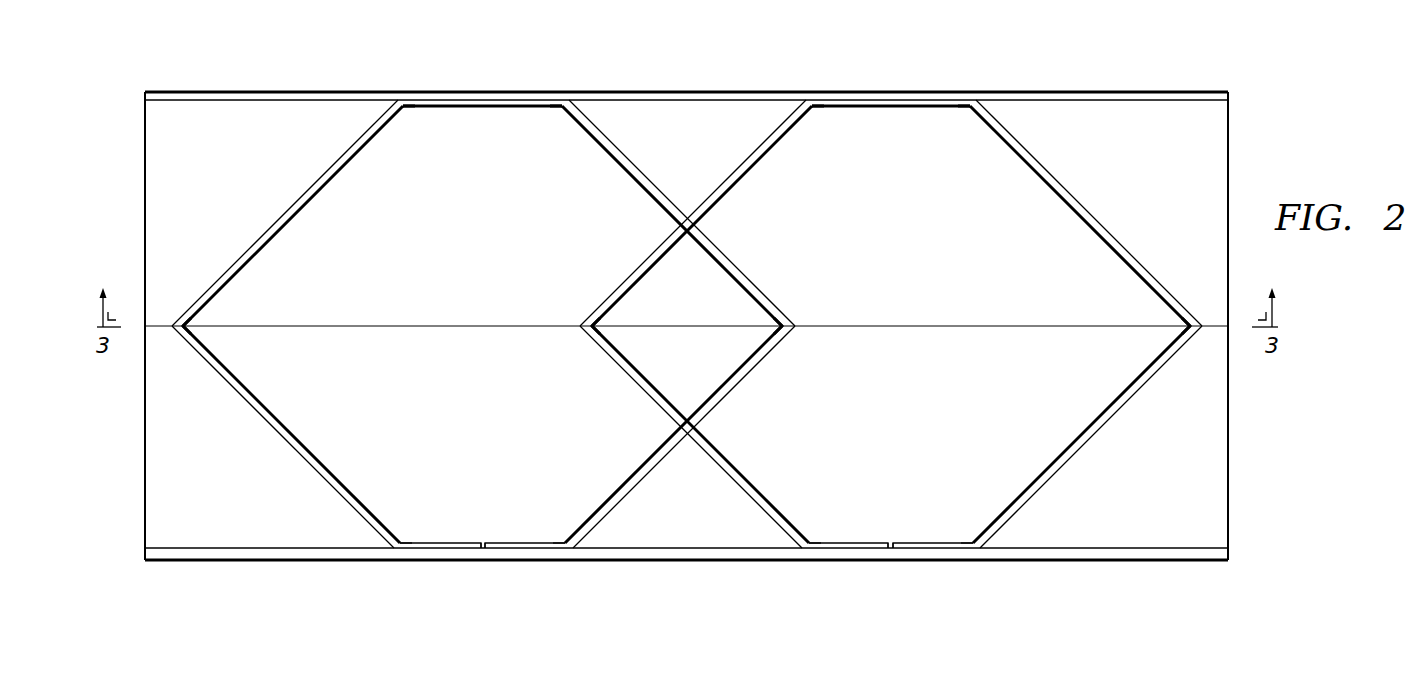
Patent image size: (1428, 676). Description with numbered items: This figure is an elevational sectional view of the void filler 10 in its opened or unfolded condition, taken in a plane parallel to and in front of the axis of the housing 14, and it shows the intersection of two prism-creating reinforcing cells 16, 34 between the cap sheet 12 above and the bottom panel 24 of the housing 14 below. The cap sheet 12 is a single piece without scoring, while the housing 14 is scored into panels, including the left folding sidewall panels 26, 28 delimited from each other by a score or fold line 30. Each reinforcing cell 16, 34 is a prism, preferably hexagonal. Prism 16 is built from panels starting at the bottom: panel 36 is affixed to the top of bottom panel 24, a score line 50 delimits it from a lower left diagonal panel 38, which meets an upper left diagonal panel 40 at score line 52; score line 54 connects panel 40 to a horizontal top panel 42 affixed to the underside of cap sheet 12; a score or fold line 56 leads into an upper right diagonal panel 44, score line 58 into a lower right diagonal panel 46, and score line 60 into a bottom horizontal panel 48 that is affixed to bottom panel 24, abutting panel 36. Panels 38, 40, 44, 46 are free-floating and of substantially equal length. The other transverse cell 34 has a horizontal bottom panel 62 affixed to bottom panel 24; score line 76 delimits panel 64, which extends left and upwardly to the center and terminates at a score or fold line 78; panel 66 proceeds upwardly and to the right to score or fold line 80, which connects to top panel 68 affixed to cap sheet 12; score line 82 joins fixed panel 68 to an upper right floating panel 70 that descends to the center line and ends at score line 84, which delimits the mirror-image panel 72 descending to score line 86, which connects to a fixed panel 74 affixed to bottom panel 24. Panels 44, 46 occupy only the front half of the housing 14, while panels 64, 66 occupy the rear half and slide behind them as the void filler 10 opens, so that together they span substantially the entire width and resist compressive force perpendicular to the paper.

The void filler 10 is at (460, 585).
The cap sheet 12 is at (1108, 90).
The housing 14 is at (886, 585).
The reinforcing cell 16 is at (310, 235).
The bottom panel 24 is at (1108, 561).
The left folding sidewall panel 26 is at (1222, 498).
The left folding sidewall panel 28 is at (1222, 152).
The score or fold line 30 is at (443, 329).
The transverse cell or prism 34 is at (1062, 235).
The panel 36 is at (455, 541).
The lower left diagonal panel 38 is at (342, 479).
The upper left diagonal panel 40 is at (340, 174).
The horizontal top panel 42 is at (486, 108).
The upper right diagonal panel 44 is at (622, 177).
The lower right diagonal panel 46 is at (626, 479).
The bottom horizontal panel 48 is at (503, 541).
The score line 50 is at (410, 541).
The score line 52 is at (192, 323).
The score line 54 is at (404, 110).
The score or fold line 56 is at (557, 110).
The score line 58 is at (772, 329).
The score line 60 is at (556, 541).
The horizontal bottom panel 62 is at (865, 541).
The panel 64 is at (746, 479).
The panel 66 is at (746, 177).
The top panel 68 is at (892, 108).
The upper right floating panel 70 is at (1032, 174).
The mirror-image panel 72 is at (1036, 479).
The fixed panel 74 is at (905, 541).
The score line 76 is at (816, 541).
The score or fold line 78 is at (602, 329).
The score or fold line 80 is at (813, 110).
The score line 82 is at (965, 110).
The score line 84 is at (1182, 323).
The score line 86 is at (962, 541).